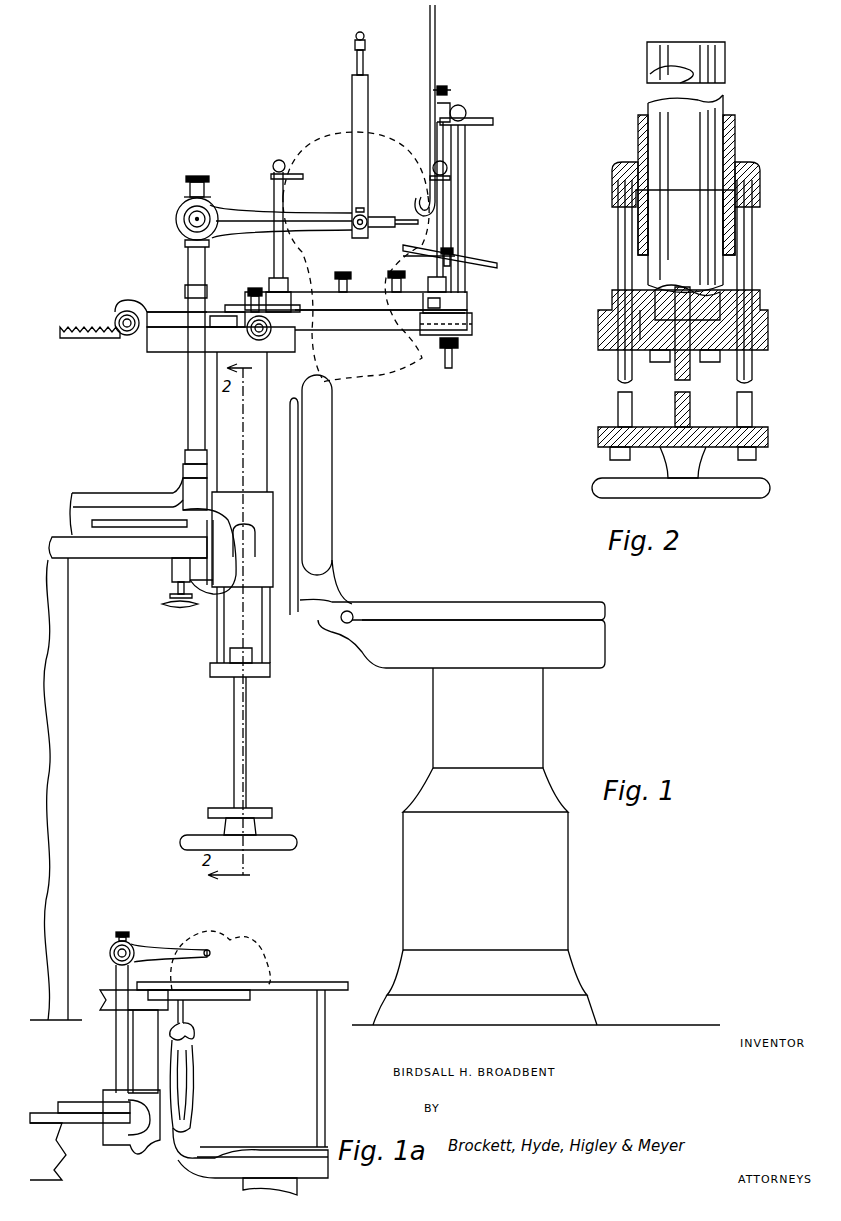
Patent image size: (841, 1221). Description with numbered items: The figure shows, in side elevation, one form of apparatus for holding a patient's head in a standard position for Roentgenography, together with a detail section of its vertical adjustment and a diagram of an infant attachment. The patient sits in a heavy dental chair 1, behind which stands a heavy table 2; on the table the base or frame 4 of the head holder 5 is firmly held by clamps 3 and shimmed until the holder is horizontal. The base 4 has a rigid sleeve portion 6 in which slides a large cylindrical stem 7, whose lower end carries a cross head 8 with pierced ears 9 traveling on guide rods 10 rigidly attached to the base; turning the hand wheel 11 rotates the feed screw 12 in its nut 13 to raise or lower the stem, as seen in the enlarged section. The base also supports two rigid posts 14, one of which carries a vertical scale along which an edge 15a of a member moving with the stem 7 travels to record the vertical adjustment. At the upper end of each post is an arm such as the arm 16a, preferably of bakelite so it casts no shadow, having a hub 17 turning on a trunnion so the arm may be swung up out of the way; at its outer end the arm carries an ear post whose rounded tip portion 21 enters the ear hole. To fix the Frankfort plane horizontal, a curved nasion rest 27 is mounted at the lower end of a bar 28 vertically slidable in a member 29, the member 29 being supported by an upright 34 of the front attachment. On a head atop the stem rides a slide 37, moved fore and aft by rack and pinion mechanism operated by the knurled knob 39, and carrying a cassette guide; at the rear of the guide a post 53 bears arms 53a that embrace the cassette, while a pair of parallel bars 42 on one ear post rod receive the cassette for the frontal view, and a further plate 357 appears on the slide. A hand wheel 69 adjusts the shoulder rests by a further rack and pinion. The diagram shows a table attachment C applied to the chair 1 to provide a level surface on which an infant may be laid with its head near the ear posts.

In FIG. 1, the chair 1 is at (436, 650).
In FIG. 1A, the chair 1 is at (192, 1112).
In FIG. 1, the table 2 is at (55, 683).
In FIG. 1, the clamps 3 is at (172, 570).
In FIG. 1, the base or frame 4 is at (112, 528).
In FIG. 1, the head holder 5 is at (186, 281).
In FIG. 1, the sleeve portion 6 is at (255, 530).
In FIG. 2, the sleeve portion 6 is at (736, 148).
In FIG. 1, the cylindrical stem 7 is at (262, 470).
In FIG. 2, the cylindrical stem 7 is at (672, 174).
In FIG. 1, the cross head 8 is at (272, 672).
In FIG. 2, the cross head 8 is at (646, 350).
In FIG. 1, the pierced ears 9 is at (232, 668).
In FIG. 2, the pierced ears 9 is at (756, 330).
In FIG. 1, the guide rods 10 is at (247, 728).
In FIG. 2, the guide rods 10 is at (617, 366).
In FIG. 1, the hand wheel 11 is at (272, 843).
In FIG. 2, the hand wheel 11 is at (622, 488).
In FIG. 2, the feed screw 12 is at (692, 406).
In FIG. 2, the nut 13 is at (702, 322).
In FIG. 1, the rigid posts 14 is at (192, 398).
In FIG. 1A, the rigid posts 14 is at (118, 1046).
In FIG. 1, the edge 15a is at (192, 340).
In FIG. 1, the arm 16a is at (232, 212).
In FIG. 1A, the arm 16a is at (150, 950).
In FIG. 1, the hub 17 is at (178, 210).
In FIG. 1, the ear post tip portion 21 is at (352, 219).
In FIG. 1A, the ear post tip portion 21 is at (210, 950).
In FIG. 1, the nasion rest 27 is at (432, 198).
In FIG. 1, the rod or bar 28 is at (432, 126).
In FIG. 1, the member 29 is at (438, 88).
In FIG. 1, the upright post 34 is at (458, 180).
In FIG. 1, the slide 37 is at (160, 312).
In FIG. 1, the knurled knob 39 is at (120, 338).
In FIG. 1, the parallel bars 42 is at (366, 102).
In FIG. 1, the post 53 is at (274, 266).
In FIG. 1, the arms 53a is at (281, 163).
In FIG. 1, the hand wheel 69 is at (262, 340).
In FIG. 1, the angle plate 357 is at (343, 280).
In FIG. 1A, the table attachment C is at (290, 984).